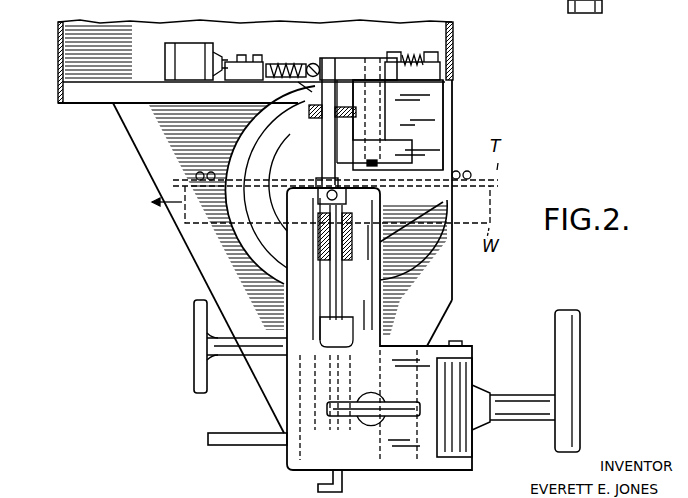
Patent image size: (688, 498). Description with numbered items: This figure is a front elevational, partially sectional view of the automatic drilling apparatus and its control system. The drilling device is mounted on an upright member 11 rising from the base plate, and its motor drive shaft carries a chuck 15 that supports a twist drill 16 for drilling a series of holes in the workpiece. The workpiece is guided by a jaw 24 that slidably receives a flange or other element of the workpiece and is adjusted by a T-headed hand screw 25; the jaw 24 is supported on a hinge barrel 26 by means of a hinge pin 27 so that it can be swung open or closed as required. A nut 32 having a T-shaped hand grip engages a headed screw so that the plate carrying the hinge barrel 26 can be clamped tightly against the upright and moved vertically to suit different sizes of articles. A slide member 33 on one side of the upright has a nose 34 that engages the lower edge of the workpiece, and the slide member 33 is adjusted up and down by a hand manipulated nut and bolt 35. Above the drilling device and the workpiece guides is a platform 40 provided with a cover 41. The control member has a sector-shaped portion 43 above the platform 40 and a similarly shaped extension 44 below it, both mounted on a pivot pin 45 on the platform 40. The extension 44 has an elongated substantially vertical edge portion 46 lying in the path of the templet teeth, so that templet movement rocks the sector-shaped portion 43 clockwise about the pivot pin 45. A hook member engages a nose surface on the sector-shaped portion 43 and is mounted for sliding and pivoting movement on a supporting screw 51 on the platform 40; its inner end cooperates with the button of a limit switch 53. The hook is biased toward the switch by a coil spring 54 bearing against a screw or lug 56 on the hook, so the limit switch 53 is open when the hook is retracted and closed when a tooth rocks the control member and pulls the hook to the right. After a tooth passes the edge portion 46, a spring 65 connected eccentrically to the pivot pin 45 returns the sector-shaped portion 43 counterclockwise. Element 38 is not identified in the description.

The upright member 11 is at (146, 161).
The chuck 15 is at (320, 183).
The twist drill 16 is at (333, 196).
The jaw 24 is at (293, 278).
The T-headed hand screw 25 is at (394, 408).
The hinge barrel 26 is at (470, 370).
The hinge pin 27 is at (456, 341).
The nut 32 is at (580, 354).
The slide member 33 is at (602, 3).
The nose 34 is at (337, 232).
The hand manipulated nut and bolt 35 is at (195, 338).
The clamp 38 is at (468, 163).
The platform 40 is at (97, 104).
The cover 41 is at (58, 60).
The sector-shaped portion 43 is at (353, 62).
The extension 44 is at (398, 148).
The pivot pin 45 is at (385, 110).
The vertical edge portion 46 is at (330, 90).
The supporting screw 51 is at (243, 55).
The limit switch 53 is at (189, 48).
The coil spring 54 is at (293, 62).
The screw or lug 56 is at (312, 62).
The spring 65 is at (403, 53).